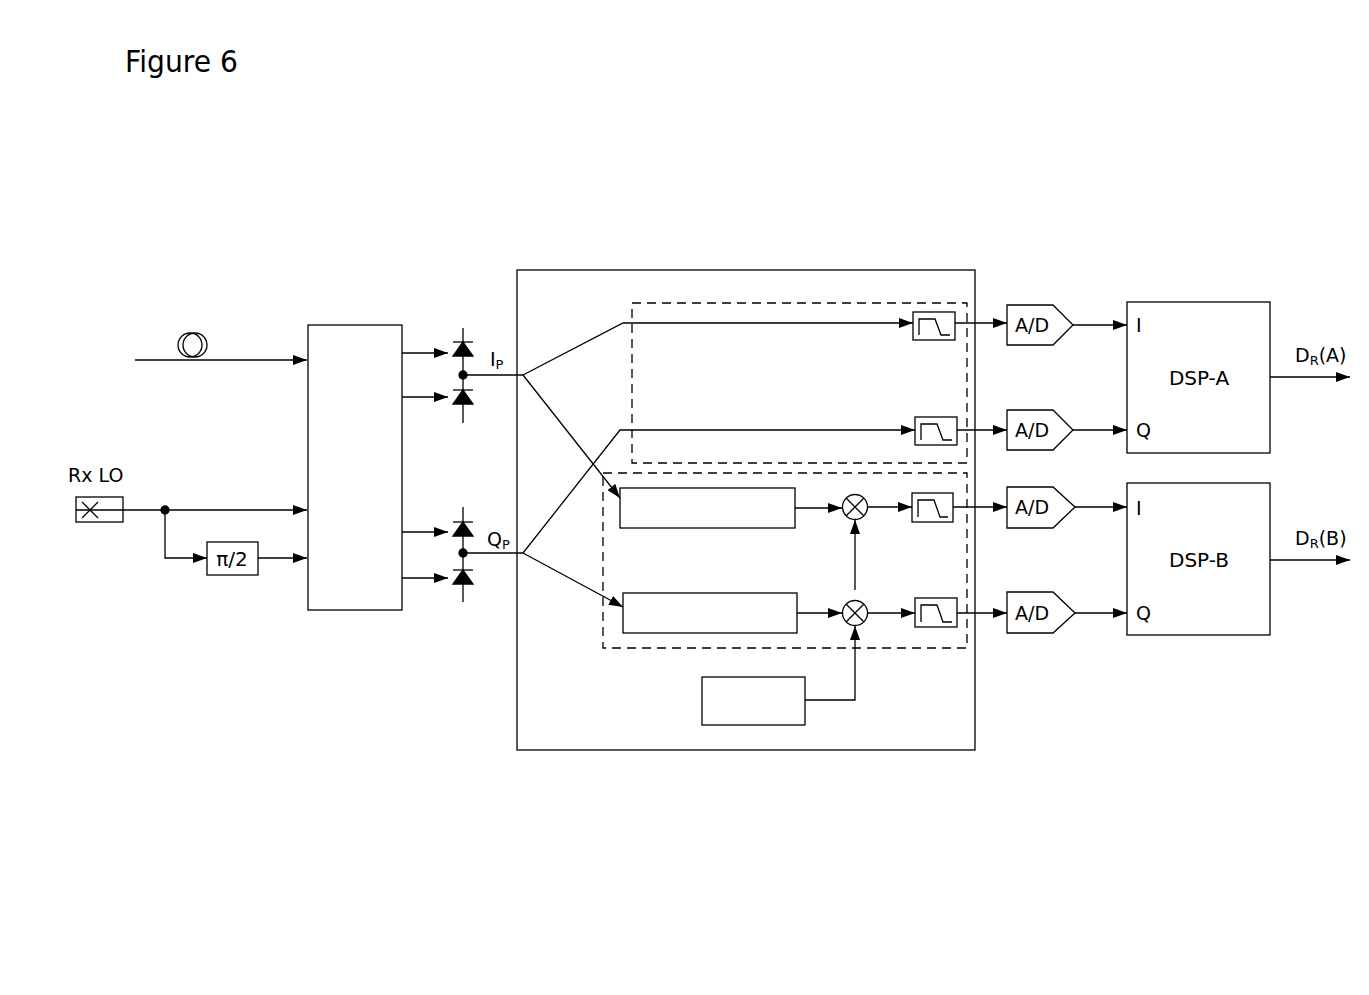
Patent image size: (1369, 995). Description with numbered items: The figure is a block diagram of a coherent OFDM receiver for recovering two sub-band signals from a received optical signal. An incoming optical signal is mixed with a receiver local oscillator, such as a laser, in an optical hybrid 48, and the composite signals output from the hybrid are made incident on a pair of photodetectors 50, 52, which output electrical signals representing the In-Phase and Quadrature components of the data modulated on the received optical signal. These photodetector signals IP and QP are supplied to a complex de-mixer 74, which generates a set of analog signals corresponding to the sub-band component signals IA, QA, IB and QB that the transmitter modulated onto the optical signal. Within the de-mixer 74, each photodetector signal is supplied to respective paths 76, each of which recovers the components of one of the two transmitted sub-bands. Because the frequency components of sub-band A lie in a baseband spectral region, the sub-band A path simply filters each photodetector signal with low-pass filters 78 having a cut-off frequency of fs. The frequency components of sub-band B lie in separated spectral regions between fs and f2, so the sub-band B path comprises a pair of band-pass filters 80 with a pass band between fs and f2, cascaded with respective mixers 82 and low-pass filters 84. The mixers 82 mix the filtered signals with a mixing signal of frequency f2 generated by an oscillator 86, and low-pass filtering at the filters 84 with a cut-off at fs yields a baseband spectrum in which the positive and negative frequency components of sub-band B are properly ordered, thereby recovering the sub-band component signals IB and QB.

The optical hybrid 48 is at (362, 325).
The photodetector 50 is at (470, 342).
The photodetector 52 is at (470, 522).
The complex de-mixer 74 is at (700, 270).
The path 76 is at (632, 307).
The low-pass filter 78 is at (905, 340).
The band-pass filter 80 is at (676, 528).
The mixer 82 is at (846, 518).
The low-pass filter 84 is at (912, 522).
The oscillator 86 is at (702, 700).